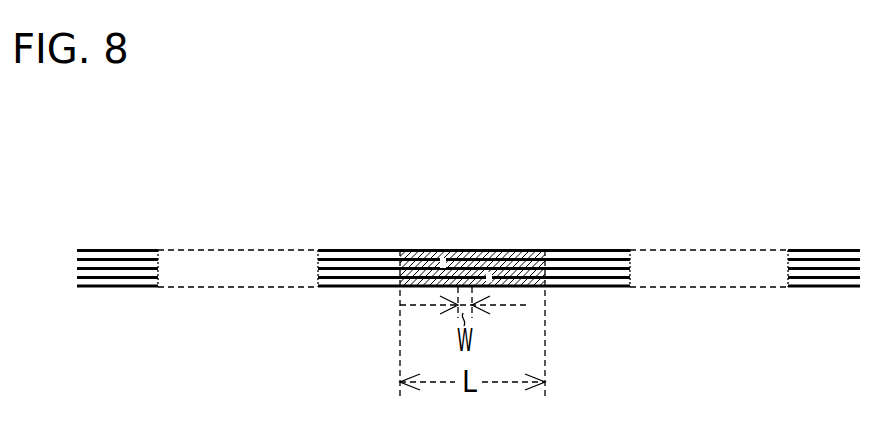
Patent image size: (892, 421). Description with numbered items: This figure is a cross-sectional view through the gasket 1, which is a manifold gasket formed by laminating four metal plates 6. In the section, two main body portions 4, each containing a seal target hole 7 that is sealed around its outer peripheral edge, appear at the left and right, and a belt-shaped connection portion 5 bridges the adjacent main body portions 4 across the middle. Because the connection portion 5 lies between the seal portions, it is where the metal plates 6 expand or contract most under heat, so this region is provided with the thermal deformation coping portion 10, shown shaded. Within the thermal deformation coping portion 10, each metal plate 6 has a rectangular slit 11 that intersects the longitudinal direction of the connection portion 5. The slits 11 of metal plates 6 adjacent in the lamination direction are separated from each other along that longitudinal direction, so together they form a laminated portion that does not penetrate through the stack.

The gasket 1 is at (670, 168).
The main body portion 4 is at (366, 250).
The connection portion 5 is at (420, 250).
The metal plate 6 is at (335, 250).
The seal target hole 7 is at (240, 249).
The thermal deformation coping portion 10 is at (506, 250).
The slit 11 is at (443, 258).